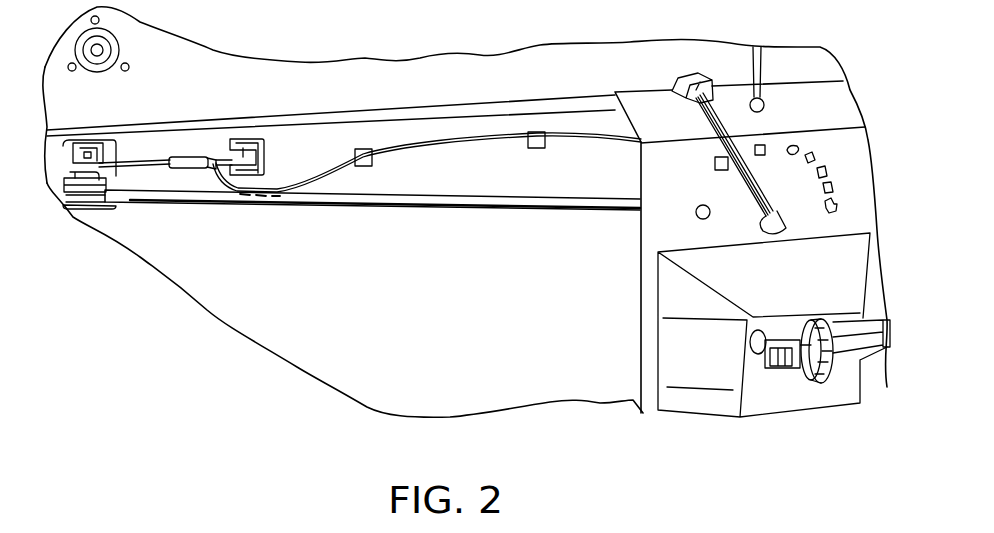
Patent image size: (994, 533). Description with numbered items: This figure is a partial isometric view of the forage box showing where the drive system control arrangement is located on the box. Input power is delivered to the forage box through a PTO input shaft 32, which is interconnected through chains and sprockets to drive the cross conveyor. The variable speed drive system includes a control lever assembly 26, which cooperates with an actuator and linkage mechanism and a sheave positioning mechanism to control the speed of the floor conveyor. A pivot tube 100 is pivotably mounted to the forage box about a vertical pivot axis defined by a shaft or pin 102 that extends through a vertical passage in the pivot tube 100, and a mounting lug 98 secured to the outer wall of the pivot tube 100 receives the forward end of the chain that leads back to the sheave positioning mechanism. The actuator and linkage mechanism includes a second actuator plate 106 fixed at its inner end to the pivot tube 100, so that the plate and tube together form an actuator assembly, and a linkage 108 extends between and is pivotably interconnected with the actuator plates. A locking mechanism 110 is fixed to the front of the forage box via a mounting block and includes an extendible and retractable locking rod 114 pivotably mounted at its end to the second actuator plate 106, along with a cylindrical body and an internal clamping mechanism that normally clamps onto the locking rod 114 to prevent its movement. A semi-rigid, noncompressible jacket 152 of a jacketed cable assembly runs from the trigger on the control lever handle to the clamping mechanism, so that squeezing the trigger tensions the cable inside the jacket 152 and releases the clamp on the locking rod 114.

The control lever assembly 26 is at (704, 122).
The PTO input shaft 32 is at (840, 365).
The mounting lug 98 is at (65, 140).
The pivot tube 100 is at (108, 163).
The shaft or pin 102 is at (107, 139).
The second actuator plate 106 is at (62, 184).
The linkage 108 is at (317, 208).
The locking mechanism 110 is at (204, 153).
The locking rod 114 is at (178, 156).
The jacket 152 is at (465, 143).